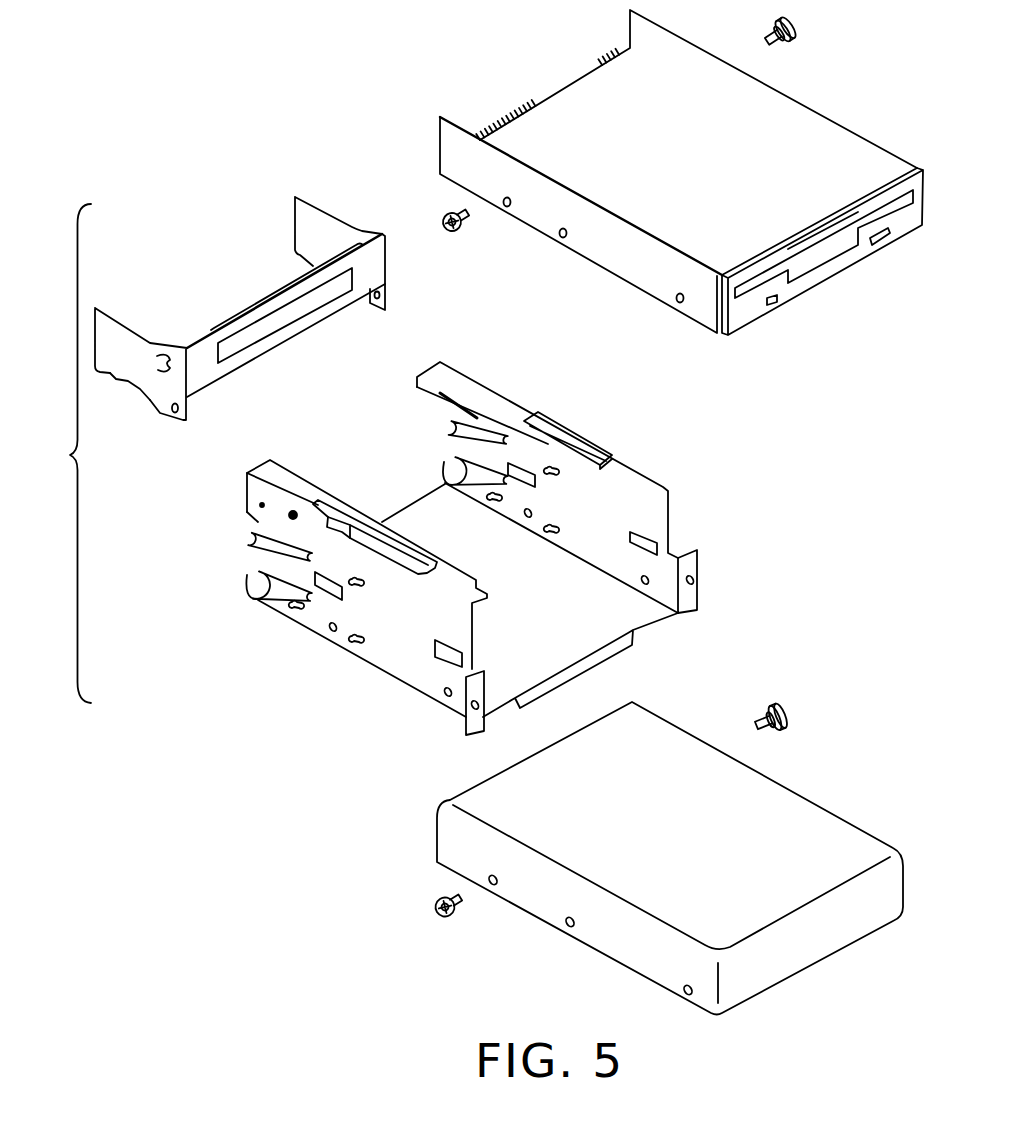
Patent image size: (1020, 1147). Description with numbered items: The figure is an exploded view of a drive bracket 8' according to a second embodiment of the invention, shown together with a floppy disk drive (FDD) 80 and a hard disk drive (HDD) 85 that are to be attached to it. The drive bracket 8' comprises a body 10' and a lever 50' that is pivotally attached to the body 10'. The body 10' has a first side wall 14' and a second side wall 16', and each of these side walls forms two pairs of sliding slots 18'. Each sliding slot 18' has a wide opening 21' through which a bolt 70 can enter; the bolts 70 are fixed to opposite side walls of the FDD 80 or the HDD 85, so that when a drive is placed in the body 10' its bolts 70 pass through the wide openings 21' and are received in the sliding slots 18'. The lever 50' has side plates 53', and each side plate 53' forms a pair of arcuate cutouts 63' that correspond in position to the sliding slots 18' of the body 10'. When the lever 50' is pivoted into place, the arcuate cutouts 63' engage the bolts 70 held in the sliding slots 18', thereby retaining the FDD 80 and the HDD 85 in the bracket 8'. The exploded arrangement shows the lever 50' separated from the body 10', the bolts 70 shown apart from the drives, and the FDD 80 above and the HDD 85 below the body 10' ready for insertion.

The drive bracket 8' is at (66, 453).
The body 10' is at (455, 533).
The first side wall 14' is at (367, 597).
The second side wall 16' is at (581, 487).
The sliding slots 18' is at (349, 479).
The wide openings 21' is at (308, 491).
The lever 50' is at (238, 325).
The side plate 53' is at (139, 363).
The arcuate cutouts 63' is at (131, 416).
The bolts 70 is at (467, 232).
The floppy disk drive (FDD) 80 is at (820, 106).
The hard disk drive (HDD) 85 is at (797, 985).